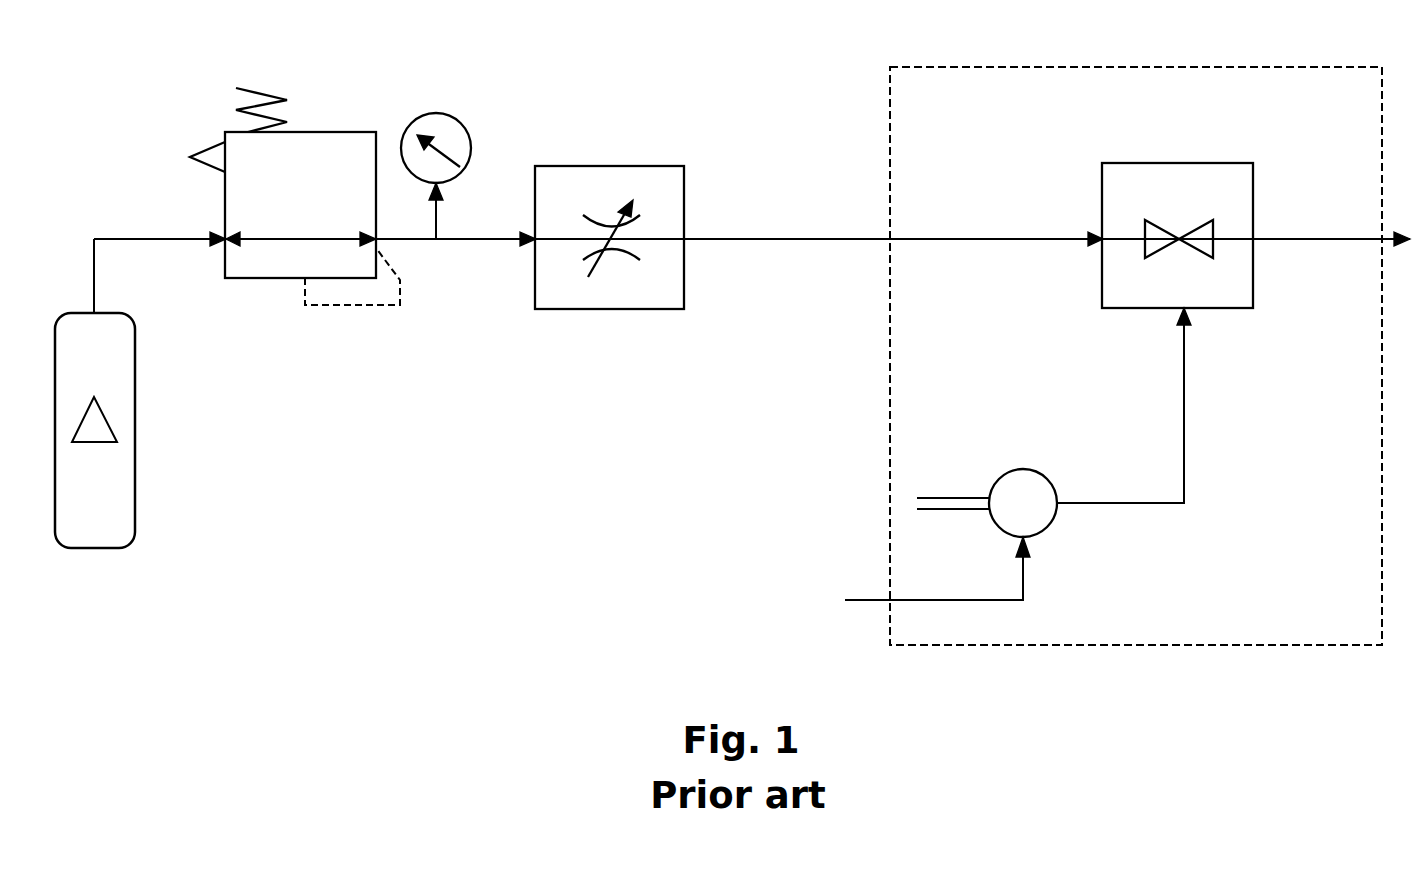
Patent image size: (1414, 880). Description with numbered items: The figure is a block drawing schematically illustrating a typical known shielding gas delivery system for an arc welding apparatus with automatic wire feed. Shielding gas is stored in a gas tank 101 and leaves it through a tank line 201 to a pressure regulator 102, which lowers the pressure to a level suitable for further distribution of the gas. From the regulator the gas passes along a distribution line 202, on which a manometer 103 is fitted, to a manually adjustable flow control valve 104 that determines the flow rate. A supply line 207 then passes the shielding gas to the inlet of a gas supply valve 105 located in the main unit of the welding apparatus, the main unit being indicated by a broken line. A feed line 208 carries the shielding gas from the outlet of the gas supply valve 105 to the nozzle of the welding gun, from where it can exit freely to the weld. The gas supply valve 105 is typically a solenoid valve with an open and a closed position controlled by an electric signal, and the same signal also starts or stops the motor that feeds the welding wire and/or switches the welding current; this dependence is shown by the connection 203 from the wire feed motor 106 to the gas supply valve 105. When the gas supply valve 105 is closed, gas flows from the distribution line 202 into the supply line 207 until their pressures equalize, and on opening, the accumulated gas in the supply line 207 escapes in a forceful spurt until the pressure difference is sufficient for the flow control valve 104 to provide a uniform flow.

The gas tank 101 is at (95, 430).
The pressure regulator 102 is at (295, 196).
The manometer 103 is at (437, 156).
The flow control valve 104 is at (609, 237).
The gas supply valve 105 is at (1177, 244).
The wire feed motor 106 is at (951, 517).
The tank line 201 is at (128, 258).
The distribution line 202 is at (456, 221).
The connection 203 is at (1120, 412).
The supply line 207 is at (996, 220).
The feed line 208 is at (1331, 220).